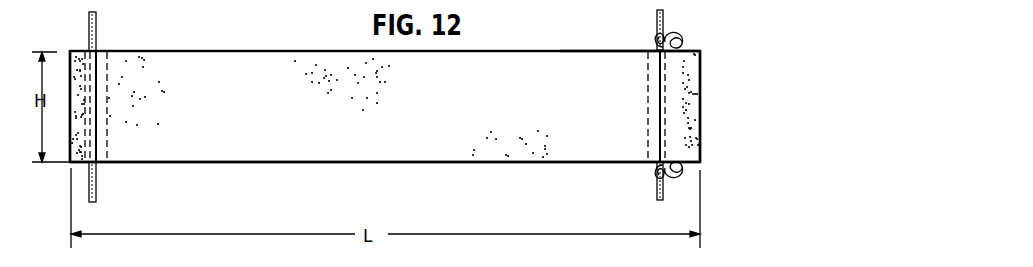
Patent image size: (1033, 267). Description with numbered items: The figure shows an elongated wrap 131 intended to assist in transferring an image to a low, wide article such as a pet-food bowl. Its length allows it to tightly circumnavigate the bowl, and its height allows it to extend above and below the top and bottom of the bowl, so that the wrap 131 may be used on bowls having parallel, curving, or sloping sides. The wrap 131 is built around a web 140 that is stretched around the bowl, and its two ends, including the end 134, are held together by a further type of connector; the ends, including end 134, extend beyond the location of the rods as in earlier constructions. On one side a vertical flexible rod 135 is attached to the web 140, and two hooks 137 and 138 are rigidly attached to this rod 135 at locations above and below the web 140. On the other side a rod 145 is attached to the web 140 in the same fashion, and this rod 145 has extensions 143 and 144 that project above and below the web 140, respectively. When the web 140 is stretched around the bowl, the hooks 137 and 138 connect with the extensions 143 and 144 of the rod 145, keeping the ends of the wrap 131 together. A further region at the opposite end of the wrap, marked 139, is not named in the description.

The wrap 131 is at (492, 105).
The end 134 is at (82, 142).
The vertical flexible rod 135 is at (630, 25).
The hook 137 is at (684, 34).
The hook 138 is at (684, 176).
The second end portion 139 is at (688, 113).
The web 140 is at (238, 135).
The extension 143 is at (95, 22).
The extension 144 is at (96, 190).
The rod 145 is at (90, 122).